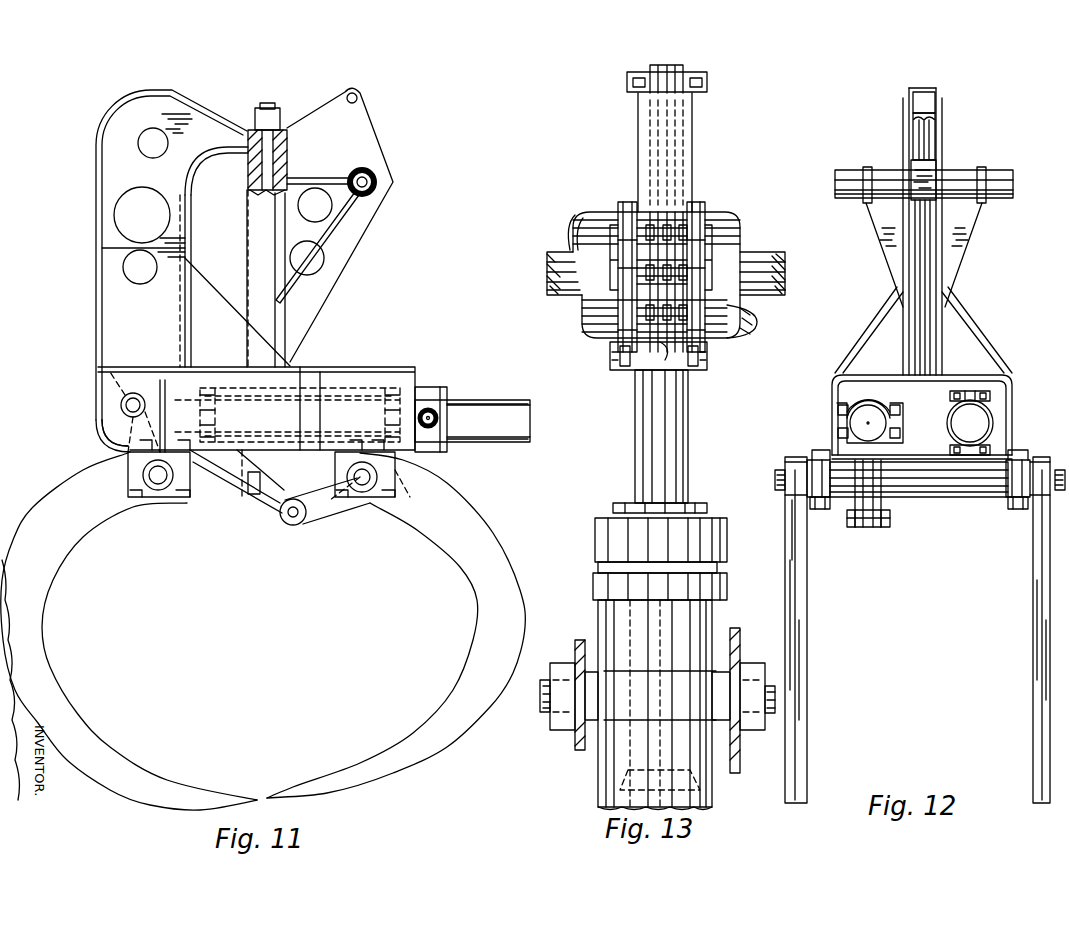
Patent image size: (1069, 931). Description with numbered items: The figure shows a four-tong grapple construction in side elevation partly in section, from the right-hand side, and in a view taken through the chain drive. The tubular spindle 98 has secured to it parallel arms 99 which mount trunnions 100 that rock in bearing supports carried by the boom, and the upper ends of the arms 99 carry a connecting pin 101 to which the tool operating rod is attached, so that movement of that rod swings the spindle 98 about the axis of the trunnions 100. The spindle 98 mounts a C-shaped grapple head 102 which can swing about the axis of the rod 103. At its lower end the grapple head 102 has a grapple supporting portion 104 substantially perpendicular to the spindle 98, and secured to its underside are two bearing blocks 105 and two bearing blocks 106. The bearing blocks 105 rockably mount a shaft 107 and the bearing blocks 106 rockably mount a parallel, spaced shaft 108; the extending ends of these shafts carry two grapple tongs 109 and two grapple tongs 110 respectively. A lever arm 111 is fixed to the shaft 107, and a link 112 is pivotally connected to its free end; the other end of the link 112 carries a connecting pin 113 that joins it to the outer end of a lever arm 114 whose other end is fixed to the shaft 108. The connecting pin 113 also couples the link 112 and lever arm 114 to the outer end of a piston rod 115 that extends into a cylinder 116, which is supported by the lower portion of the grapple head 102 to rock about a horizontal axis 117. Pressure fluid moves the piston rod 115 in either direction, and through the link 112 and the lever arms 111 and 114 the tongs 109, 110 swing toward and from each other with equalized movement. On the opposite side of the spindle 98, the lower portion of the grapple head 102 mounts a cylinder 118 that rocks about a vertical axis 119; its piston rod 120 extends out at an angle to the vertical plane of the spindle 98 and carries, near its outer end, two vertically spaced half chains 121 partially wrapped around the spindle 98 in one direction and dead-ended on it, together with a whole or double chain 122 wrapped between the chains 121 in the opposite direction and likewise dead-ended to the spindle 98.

In FIG. 11, the tubular spindle 98 is at (252, 256).
In FIG. 13, the tubular spindle 98 is at (718, 210).
In FIG. 12, the tubular spindle 98 is at (922, 262).
In FIG. 11, the parallel arms 99 is at (338, 256).
In FIG. 12, the parallel arms 99 is at (900, 280).
In FIG. 11, the trunnions 100 is at (378, 182).
In FIG. 12, the trunnions 100 is at (850, 192).
In FIG. 11, the connecting pin 101 is at (360, 96).
In FIG. 12, the connecting pin 101 is at (926, 95).
In FIG. 11, the C-shaped grapple head 102 is at (78, 329).
In FIG. 11, the rod 103 is at (272, 148).
In FIG. 13, the rod 103 is at (750, 256).
In FIG. 11, the grapple supporting portion 104 is at (395, 455).
In FIG. 11, the bearing blocks 105 is at (403, 503).
In FIG. 12, the bearing blocks 105 is at (822, 512).
In FIG. 11, the bearing blocks 106 is at (202, 488).
In FIG. 11, the shaft 107 is at (363, 482).
In FIG. 12, the shaft 107 is at (942, 485).
In FIG. 11, the shaft 108 is at (160, 480).
In FIG. 11, the grapple tongs 109 is at (500, 705).
In FIG. 12, the grapple tongs 109 is at (806, 708).
In FIG. 11, the grapple tongs 110 is at (90, 728).
In FIG. 11, the lever arm 111 is at (318, 505).
In FIG. 12, the lever arm 111 is at (882, 508).
In FIG. 11, the link 112 is at (220, 463).
In FIG. 12, the link 112 is at (870, 525).
In FIG. 11, the connecting pin 113 is at (120, 405).
In FIG. 11, the lever arm 114 is at (116, 434).
In FIG. 11, the piston rod 115 is at (176, 396).
In FIG. 11, the cylinder 116 is at (505, 432).
In FIG. 12, the cylinder 116 is at (852, 400).
In FIG. 11, the horizontal axis 117 is at (438, 418).
In FIG. 12, the horizontal axis 117 is at (832, 420).
In FIG. 11, the cylinder 118 is at (520, 400).
In FIG. 13, the cylinder 118 is at (600, 532).
In FIG. 12, the cylinder 118 is at (992, 405).
In FIG. 13, the vertical axis 119 is at (560, 663).
In FIG. 12, the vertical axis 119 is at (968, 394).
In FIG. 11, the piston rod 120 is at (232, 390).
In FIG. 13, the piston rod 120 is at (640, 420).
In FIG. 13, the half chains 121 is at (620, 200).
In FIG. 13, the double chain 122 is at (685, 370).